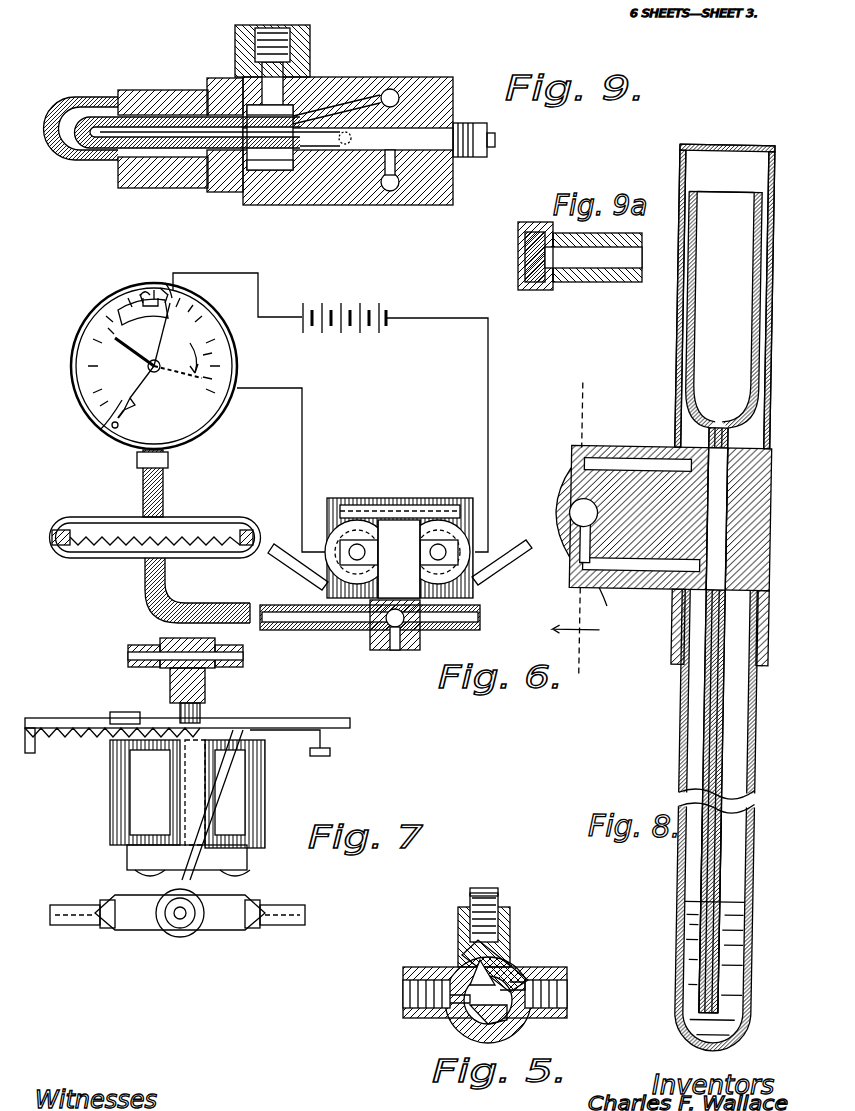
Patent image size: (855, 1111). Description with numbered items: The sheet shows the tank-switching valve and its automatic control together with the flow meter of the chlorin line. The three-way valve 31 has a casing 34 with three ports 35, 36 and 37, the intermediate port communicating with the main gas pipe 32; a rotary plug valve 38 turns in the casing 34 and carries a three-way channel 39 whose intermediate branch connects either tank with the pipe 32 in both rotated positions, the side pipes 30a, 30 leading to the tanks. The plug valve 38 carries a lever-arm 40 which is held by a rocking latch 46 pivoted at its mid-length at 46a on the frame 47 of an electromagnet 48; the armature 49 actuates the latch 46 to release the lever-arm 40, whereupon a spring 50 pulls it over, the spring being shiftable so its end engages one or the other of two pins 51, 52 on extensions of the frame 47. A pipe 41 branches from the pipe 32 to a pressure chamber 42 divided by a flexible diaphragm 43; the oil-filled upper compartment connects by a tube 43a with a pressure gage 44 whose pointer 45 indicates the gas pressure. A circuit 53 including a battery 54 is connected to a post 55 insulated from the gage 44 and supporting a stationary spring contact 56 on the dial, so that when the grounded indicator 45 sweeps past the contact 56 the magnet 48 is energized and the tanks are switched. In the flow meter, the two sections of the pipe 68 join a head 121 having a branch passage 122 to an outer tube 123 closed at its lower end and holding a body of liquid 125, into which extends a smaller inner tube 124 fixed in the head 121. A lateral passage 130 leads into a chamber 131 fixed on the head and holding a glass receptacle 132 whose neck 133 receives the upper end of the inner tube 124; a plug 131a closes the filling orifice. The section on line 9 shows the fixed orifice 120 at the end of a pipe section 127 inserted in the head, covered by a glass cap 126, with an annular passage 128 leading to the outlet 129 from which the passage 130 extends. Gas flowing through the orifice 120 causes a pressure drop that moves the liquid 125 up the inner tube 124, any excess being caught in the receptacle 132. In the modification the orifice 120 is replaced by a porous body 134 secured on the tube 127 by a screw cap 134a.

In FIG. 9, the fixed orifice 120 is at (100, 97).
In FIG. 9, the glass chamber or cap 126 is at (78, 165).
In FIG. 9, the annular passage 128 is at (185, 188).
In FIG. 9, the pipe section 127 is at (265, 192).
In FIG. 9A, the pipe section 127 is at (610, 285).
In FIG. 9, the outlet 129 is at (278, 30).
In FIG. 9, the lateral passage 130 is at (388, 92).
In FIG. 8, the lateral passage 130 is at (597, 462).
In FIG. 9, the head or body 121 is at (335, 205).
In FIG. 8, the head or body 121 is at (660, 458).
In FIG. 9, the branch passage 122 is at (395, 192).
In FIG. 8, the branch passage 122 is at (621, 606).
In FIG. 9, the pipe 68 is at (495, 140).
In FIG. 8, the pipe 68 is at (582, 545).
In FIG. 9A, the body of porous material 134 is at (540, 290).
In FIG. 9A, the screw cap 134a is at (520, 255).
In FIG. 8, the plug 131a is at (765, 120).
In FIG. 8, the chamber 131 is at (685, 410).
In FIG. 8, the receptacle or vessel 132 is at (705, 385).
In FIG. 8, the neck 133 is at (724, 425).
In FIG. 8, the outer tube 123 is at (690, 735).
In FIG. 8, the inner tube 124 is at (714, 766).
In FIG. 8, the body of liquid 125 is at (695, 905).
In FIG. 8, the section line 9 is at (578, 532).
In FIG. 6, the pressure gage 44 is at (165, 430).
In FIG. 7, the pressure gage 44 is at (150, 650).
In FIG. 6, the pointer or indicator 45 is at (112, 428).
In FIG. 6, the stationary spring contact 56 is at (145, 296).
In FIG. 6, the post 55 is at (165, 288).
In FIG. 6, the circuit 53 is at (400, 322).
In FIG. 6, the battery 54 is at (340, 335).
In FIG. 6, the lever-arm 40 is at (450, 512).
In FIG. 7, the lever-arm 40 is at (208, 815).
In FIG. 6, the frame 47 is at (470, 530).
In FIG. 7, the frame 47 is at (255, 862).
In FIG. 6, the electromagnet 48 is at (338, 545).
In FIG. 7, the electromagnet 48 is at (110, 795).
In FIG. 6, the rocking latch 46 is at (395, 507).
In FIG. 7, the rocking latch 46 is at (170, 712).
In FIG. 6, the pivot 46a is at (430, 505).
In FIG. 7, the pivot 46a is at (205, 712).
In FIG. 6, the pin 52 is at (500, 572).
In FIG. 7, the pin 52 is at (318, 756).
In FIG. 6, the pipe 41 is at (285, 605).
In FIG. 6, the pipe 32 is at (398, 650).
In FIG. 5, the pipe 32 is at (490, 894).
In FIG. 6, the tube 43a is at (165, 470).
In FIG. 6, the flexible diaphragm 43 is at (180, 520).
In FIG. 6, the pressure chamber 42 is at (185, 560).
In FIG. 7, the armature 49 is at (110, 718).
In FIG. 7, the spring 50 is at (78, 745).
In FIG. 7, the pin 51 is at (35, 758).
In FIG. 7, the three-way valve 31 is at (185, 937).
In FIG. 5, the three-way valve 31 is at (445, 962).
In FIG. 7, the pipe 30a is at (90, 925).
In FIG. 5, the pipe 30a is at (403, 1000).
In FIG. 7, the pipe 30 is at (280, 925).
In FIG. 5, the pipe 30 is at (567, 1000).
In FIG. 5, the port 36 is at (505, 950).
In FIG. 5, the three-way channel 39 is at (470, 1025).
In FIG. 5, the rotary plug valve 38 is at (507, 1022).
In FIG. 5, the casing 34 is at (512, 970).
In FIG. 5, the port 35 is at (525, 985).
In FIG. 5, the port 37 is at (445, 1015).